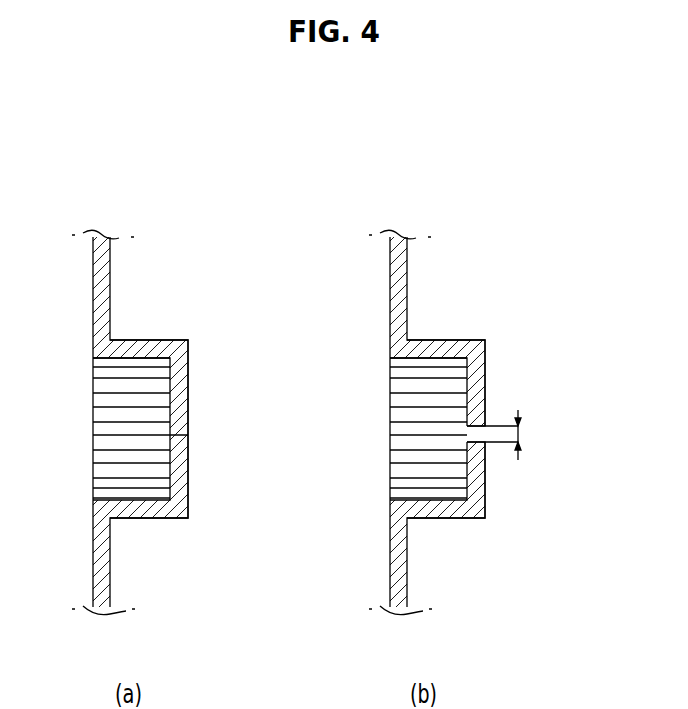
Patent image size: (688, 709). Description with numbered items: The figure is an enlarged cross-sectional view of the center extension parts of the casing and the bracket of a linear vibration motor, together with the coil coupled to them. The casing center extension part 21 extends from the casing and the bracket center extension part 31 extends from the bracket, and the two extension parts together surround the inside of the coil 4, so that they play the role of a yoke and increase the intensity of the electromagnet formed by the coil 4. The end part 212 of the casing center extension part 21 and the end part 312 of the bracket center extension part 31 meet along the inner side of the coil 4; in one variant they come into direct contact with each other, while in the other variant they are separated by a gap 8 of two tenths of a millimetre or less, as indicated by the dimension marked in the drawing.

The casing center extension part 21 is at (110, 271).
The coil 4 is at (110, 418).
The bracket center extension part 31 is at (158, 512).
The end part of the casing center extension part 212 is at (485, 425).
The end part of the bracket center extension part 312 is at (485, 443).
The gap 8 is at (592, 425).